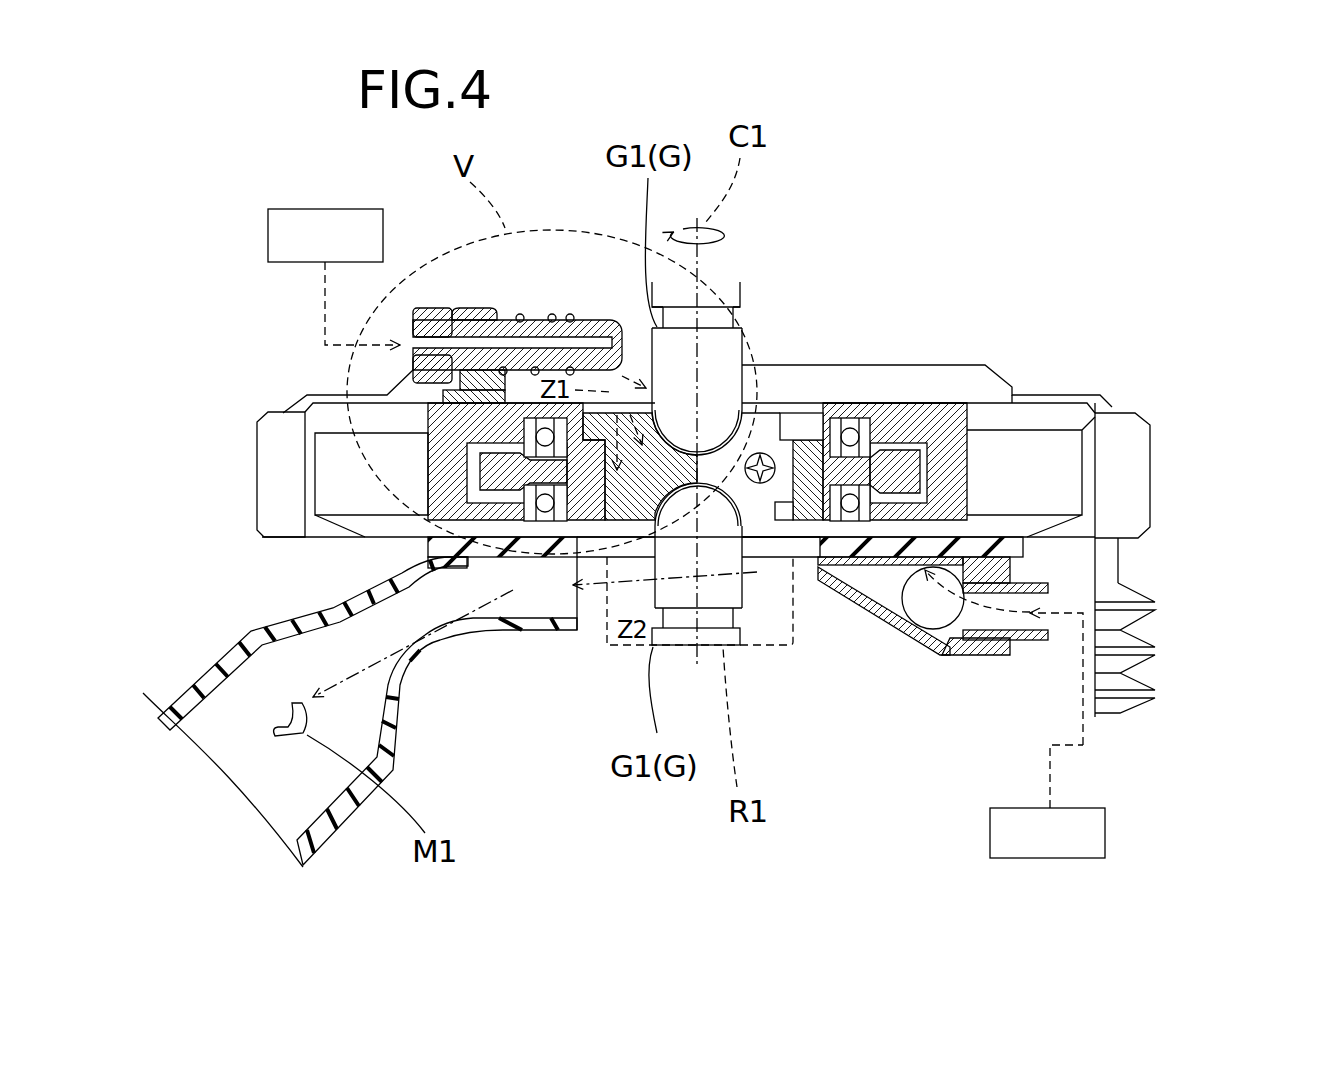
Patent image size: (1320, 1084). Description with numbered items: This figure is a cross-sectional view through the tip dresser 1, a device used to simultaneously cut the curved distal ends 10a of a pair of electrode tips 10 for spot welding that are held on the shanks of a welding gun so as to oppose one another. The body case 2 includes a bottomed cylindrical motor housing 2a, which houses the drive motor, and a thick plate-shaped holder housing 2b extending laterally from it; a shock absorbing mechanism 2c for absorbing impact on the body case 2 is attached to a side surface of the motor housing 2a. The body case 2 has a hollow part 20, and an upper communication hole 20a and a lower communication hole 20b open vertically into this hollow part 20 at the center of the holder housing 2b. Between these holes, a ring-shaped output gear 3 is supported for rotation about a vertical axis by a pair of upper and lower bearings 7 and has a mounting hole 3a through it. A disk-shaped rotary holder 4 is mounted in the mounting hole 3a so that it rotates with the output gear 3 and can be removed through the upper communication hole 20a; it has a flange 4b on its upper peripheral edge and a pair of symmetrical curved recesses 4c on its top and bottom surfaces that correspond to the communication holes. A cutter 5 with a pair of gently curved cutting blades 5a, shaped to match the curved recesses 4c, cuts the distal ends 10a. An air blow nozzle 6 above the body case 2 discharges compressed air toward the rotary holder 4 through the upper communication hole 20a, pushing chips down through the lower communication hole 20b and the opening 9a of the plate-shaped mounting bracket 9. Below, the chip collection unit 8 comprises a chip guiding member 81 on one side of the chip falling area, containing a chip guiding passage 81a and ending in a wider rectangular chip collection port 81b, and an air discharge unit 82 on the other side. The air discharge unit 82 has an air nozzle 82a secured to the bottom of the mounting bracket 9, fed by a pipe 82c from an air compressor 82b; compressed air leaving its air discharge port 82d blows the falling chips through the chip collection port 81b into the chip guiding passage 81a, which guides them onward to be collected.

The tip dresser 1 is at (1133, 302).
The body case 2 is at (288, 392).
The motor housing 2a is at (1097, 663).
The holder housing 2b is at (305, 468).
The shock absorbing mechanism 2c is at (1142, 592).
The output gear 3 is at (922, 467).
The mounting hole 3a is at (800, 423).
The rotary holder 4 is at (622, 535).
The flange 4b is at (812, 403).
The curved recesses 4c is at (640, 443).
The cutter 5 is at (772, 537).
The cutting blades 5a is at (746, 340).
The air blow nozzle 6 is at (470, 300).
The bearings 7 is at (518, 507).
The chip collection unit 8 is at (258, 600).
The mounting bracket 9 is at (428, 545).
The opening 9a is at (817, 563).
The electrode tips 10 is at (652, 328).
The distal ends 10a is at (716, 452).
The hollow part 20 is at (903, 403).
The upper communication hole 20a is at (830, 403).
The lower communication hole 20b is at (813, 540).
The chip guiding member 81 is at (227, 655).
The chip guiding passage 81a is at (400, 643).
The chip collection port 81b is at (577, 632).
The air discharge unit 82 is at (953, 802).
The air nozzle 82a is at (997, 657).
The air compressor 82b is at (268, 210).
The pipe 82c is at (1088, 748).
The air discharge port 82d is at (843, 565).